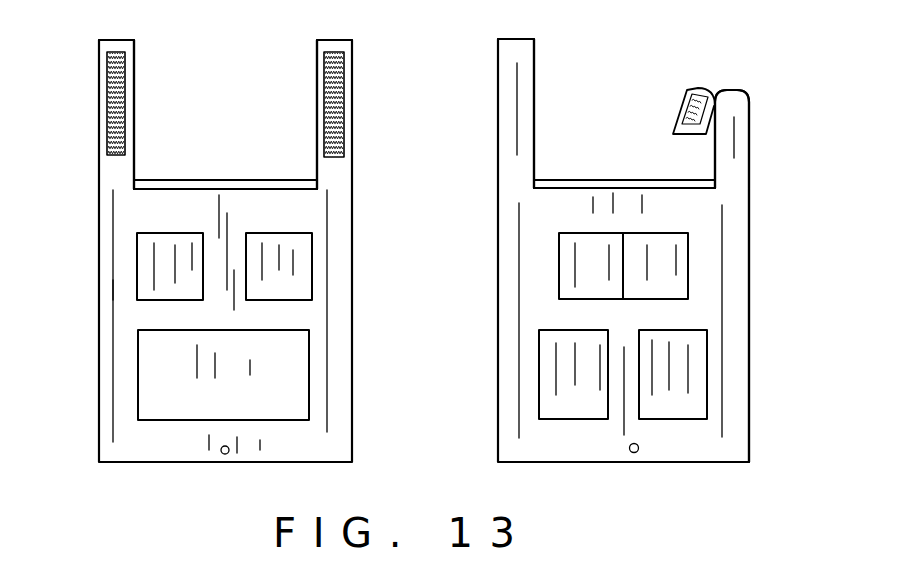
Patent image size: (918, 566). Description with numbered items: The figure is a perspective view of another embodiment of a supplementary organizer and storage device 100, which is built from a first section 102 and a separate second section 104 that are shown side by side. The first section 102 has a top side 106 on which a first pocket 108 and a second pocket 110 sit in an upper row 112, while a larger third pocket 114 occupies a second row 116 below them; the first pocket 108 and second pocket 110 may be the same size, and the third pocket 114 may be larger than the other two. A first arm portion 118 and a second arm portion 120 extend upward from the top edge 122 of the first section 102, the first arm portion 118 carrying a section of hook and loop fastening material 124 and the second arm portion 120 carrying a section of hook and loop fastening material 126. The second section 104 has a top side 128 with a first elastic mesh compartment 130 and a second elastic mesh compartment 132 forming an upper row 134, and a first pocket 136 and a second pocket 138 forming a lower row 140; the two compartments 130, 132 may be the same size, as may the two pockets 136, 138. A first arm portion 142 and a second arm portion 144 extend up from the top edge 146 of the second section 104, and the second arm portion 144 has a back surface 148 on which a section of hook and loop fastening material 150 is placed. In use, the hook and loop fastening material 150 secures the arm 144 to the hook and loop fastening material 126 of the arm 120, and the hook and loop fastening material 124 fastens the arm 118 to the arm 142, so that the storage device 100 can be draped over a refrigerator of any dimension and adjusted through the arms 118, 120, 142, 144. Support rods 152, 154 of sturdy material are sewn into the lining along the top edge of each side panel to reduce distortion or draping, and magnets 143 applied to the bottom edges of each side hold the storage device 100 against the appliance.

The supplementary organizer and storage device 100 is at (250, 484).
The first section 102 is at (84, 267).
The second section 104 is at (766, 349).
The top side 106 is at (124, 370).
The first pocket 108 is at (155, 255).
The second pocket 110 is at (302, 268).
The upper row 112 is at (120, 288).
The third pocket 114 is at (175, 399).
The second row 116 is at (336, 383).
The first arm portion 118 is at (113, 45).
The second arm portion 120 is at (352, 42).
The top edge 122 is at (186, 180).
The hook and loop fastening material 124 is at (113, 108).
The hook and loop fastening material 126 is at (344, 96).
The top side 128 is at (521, 290).
The first elastic mesh compartment 130 is at (575, 255).
The second elastic mesh compartment 132 is at (672, 262).
The upper row 134 is at (730, 280).
The first pocket 136 is at (575, 374).
The second pocket 138 is at (690, 400).
The lower row 140 is at (620, 445).
The first arm portion 142 is at (512, 118).
The magnets 143 is at (225, 455).
The second arm portion 144 is at (740, 158).
The top edge 146 is at (630, 180).
The back surface 148 is at (673, 125).
The hook and loop fastening material 150 is at (700, 90).
The support rod 152 is at (240, 189).
The support rod 154 is at (552, 180).